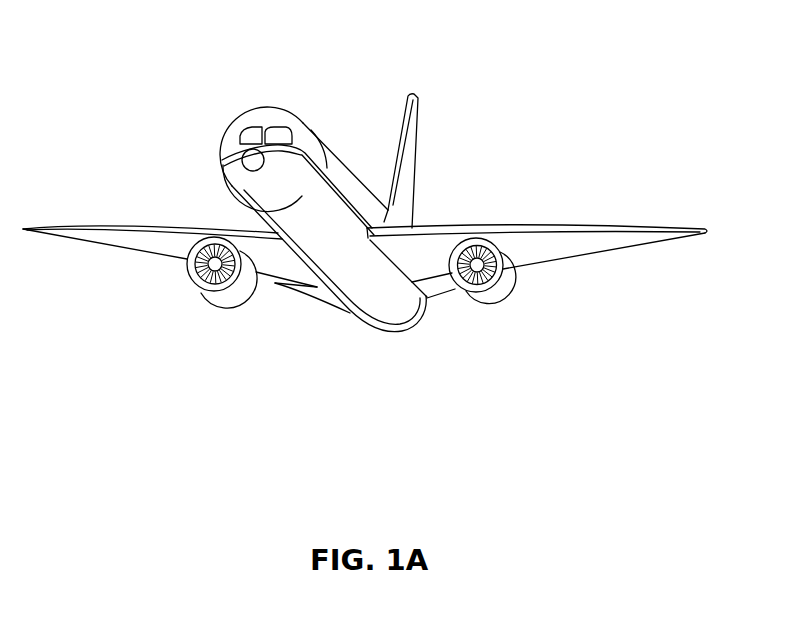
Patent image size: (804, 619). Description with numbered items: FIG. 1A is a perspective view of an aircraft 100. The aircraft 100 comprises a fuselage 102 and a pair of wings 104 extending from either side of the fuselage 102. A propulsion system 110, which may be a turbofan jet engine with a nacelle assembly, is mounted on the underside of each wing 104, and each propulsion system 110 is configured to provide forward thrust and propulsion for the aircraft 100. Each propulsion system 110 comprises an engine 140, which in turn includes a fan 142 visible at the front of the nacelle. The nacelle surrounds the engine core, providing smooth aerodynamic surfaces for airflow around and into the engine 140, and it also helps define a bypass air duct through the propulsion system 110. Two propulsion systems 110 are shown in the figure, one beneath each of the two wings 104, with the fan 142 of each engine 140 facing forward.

The aircraft 100 is at (148, 86).
The fuselage 102 is at (335, 160).
The wing 104 is at (127, 226).
The propulsion system 110 is at (228, 297).
The engine 140 is at (243, 286).
The fan 142 is at (195, 280).